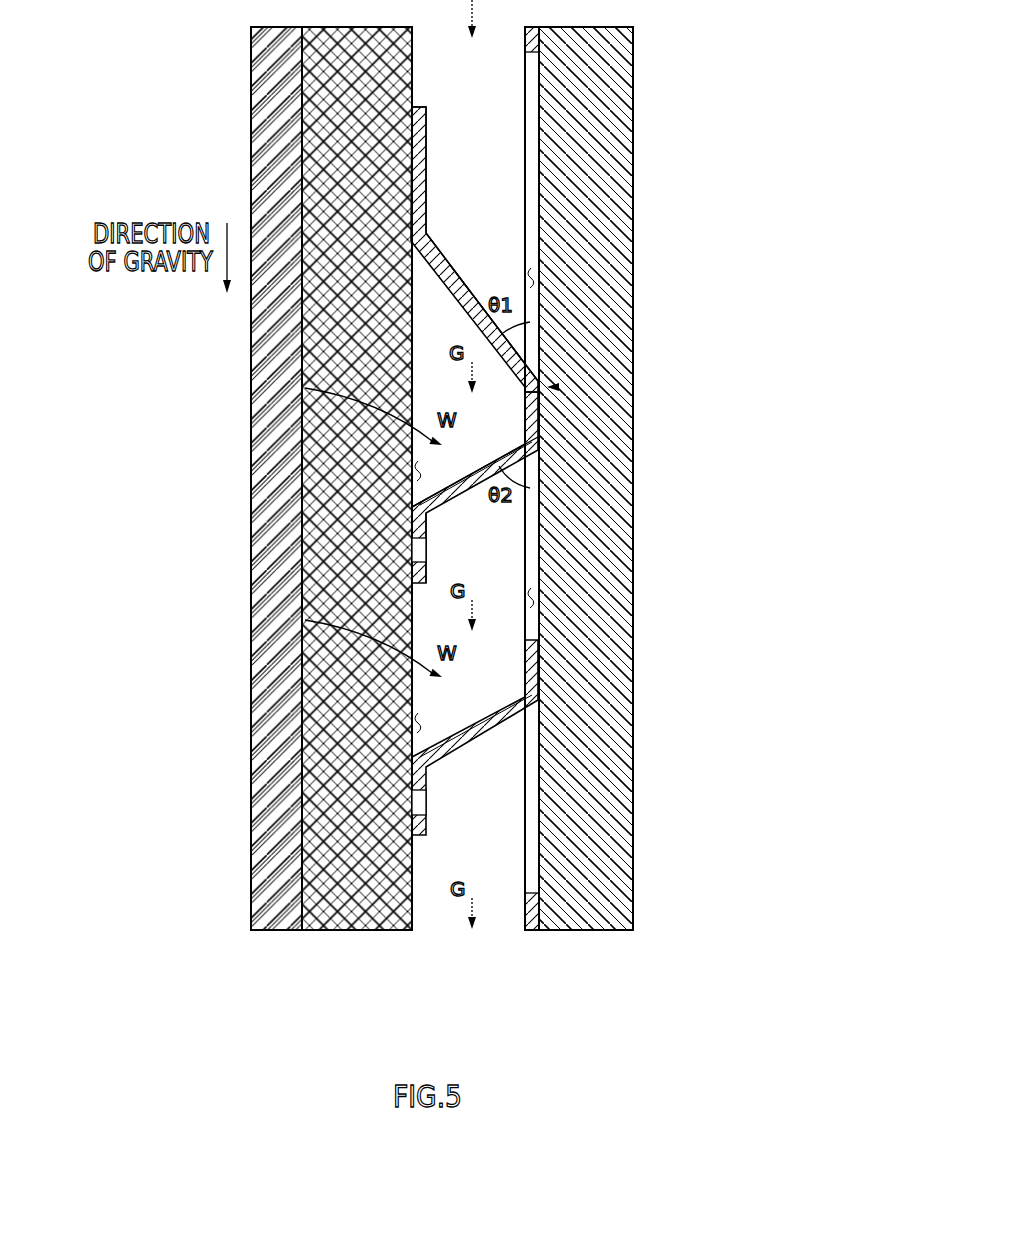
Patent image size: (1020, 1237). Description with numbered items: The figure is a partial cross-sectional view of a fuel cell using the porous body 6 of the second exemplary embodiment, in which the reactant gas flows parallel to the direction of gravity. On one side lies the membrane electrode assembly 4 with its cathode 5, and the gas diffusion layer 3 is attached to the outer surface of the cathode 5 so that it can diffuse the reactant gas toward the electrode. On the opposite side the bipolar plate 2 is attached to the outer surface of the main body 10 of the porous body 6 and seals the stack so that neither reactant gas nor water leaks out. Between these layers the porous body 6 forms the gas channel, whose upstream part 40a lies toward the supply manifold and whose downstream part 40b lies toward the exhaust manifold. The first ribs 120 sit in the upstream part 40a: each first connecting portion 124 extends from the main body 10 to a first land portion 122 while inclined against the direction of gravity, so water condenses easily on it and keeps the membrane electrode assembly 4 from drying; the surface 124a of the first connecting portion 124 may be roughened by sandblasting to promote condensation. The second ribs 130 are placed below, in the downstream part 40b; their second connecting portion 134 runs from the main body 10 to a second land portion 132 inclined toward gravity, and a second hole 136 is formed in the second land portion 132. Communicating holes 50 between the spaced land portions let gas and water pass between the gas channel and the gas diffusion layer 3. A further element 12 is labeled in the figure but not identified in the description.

The bipolar plate 2 is at (620, 731).
The gas diffusion layer 3 is at (300, 335).
The membrane electrode assembly 4 is at (233, 92).
The cathode 5 is at (262, 162).
The porous body 6 is at (558, 387).
The main body 10 is at (538, 423).
The slit 12 is at (535, 280).
The upstream part of the gas channel 40a is at (512, 48).
The downstream part of the gas channel 40b is at (512, 918).
The communicating hole 50 is at (416, 470).
The first ribs 120 is at (711, 140).
The first land portion 122 is at (427, 167).
The first connecting portion 124 is at (445, 253).
The one surface of the first connecting portion 124a is at (477, 285).
The second ribs 130 is at (725, 483).
The second land portion 132 is at (430, 527).
The second connecting portion 134 is at (458, 502).
The second hole 136 is at (430, 547).